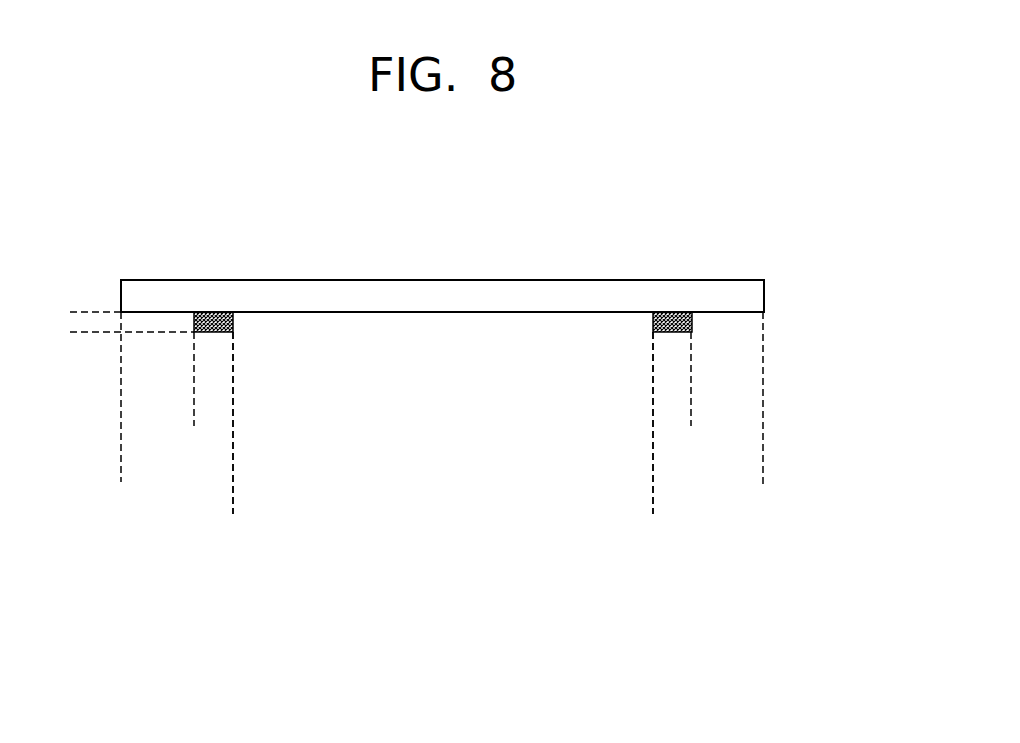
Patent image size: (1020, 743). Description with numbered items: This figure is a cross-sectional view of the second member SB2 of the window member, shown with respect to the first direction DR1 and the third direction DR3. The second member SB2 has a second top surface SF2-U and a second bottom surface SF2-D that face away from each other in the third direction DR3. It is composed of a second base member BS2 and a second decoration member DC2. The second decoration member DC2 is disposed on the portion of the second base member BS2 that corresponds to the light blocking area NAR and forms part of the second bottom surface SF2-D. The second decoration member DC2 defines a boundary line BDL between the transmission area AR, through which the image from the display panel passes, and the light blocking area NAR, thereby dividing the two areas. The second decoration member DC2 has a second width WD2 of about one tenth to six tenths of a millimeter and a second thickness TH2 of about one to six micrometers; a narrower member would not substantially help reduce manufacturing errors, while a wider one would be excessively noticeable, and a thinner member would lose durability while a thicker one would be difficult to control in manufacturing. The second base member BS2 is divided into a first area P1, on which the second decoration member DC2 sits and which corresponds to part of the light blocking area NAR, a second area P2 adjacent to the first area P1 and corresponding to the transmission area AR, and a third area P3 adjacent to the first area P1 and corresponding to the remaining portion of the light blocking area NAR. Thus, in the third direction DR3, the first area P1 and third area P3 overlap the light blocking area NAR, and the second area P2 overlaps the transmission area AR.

The second member SB2 is at (691, 212).
The second base member BS2 is at (757, 297).
The second top surface SF2-U is at (553, 279).
The second bottom surface SF2-D is at (553, 312).
The second decoration member DC2 is at (688, 322).
The second thickness TH2 is at (81, 281).
The second width WD2 is at (232, 367).
The first area P1 is at (232, 419).
The second area P2 is at (234, 419).
The third area P3 is at (122, 419).
The light blocking area NAR is at (232, 471).
The transmission area AR is at (234, 471).
The boundary line BDL is at (233, 495).
The first direction DR1 is at (804, 609).
The third direction DR3 is at (804, 609).